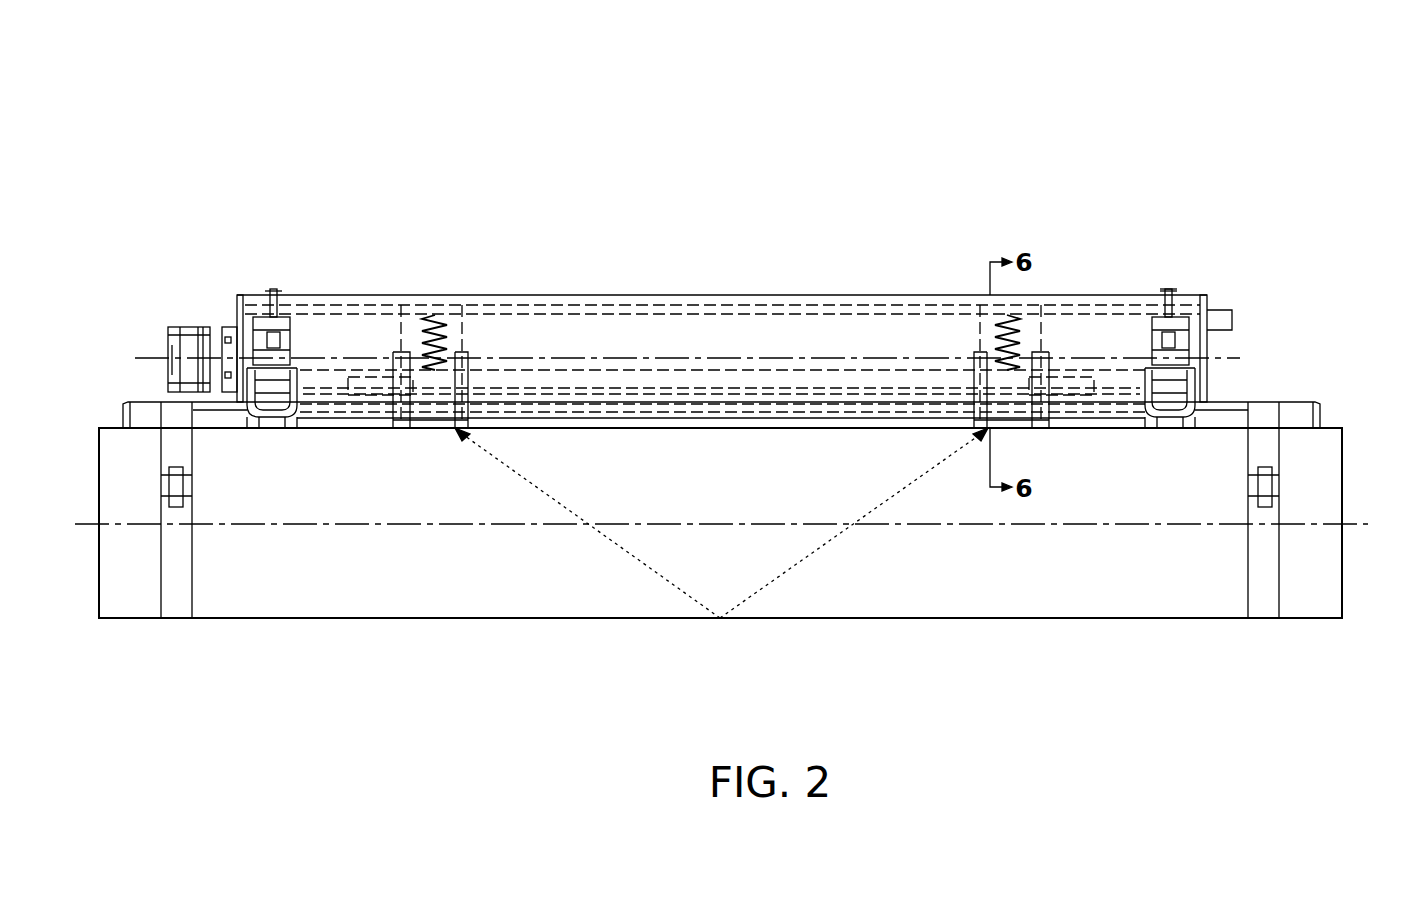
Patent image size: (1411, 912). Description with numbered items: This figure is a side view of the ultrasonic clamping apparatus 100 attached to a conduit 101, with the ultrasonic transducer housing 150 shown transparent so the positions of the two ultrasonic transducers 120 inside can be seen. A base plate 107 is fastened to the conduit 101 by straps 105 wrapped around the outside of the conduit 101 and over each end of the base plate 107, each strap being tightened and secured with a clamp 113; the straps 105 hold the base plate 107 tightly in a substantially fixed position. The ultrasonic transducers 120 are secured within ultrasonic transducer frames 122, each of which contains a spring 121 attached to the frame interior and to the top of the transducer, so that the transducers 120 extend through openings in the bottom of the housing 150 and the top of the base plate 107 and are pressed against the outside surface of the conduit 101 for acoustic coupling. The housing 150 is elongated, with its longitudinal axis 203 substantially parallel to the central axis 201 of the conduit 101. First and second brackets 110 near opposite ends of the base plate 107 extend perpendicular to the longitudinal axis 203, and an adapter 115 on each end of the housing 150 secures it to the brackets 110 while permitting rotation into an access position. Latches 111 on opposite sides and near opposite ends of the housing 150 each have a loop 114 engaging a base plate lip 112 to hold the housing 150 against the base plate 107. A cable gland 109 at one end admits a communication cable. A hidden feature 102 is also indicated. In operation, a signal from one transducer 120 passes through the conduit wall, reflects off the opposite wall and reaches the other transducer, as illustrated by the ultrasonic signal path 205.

The ultrasonic clamping apparatus 100 is at (815, 213).
The conduit 101 is at (977, 620).
The hidden mounting feature 102 is at (1085, 430).
The straps 105 is at (177, 622).
The base plate 107 is at (1293, 402).
The cable gland 109 is at (190, 327).
The brackets 110 is at (240, 300).
The clamps 111 is at (253, 325).
The base plate lip 112 is at (270, 418).
The clamp 113 is at (192, 485).
The loop 114 is at (290, 428).
The adapter 115 is at (236, 312).
The ultrasonic transducers 120 is at (462, 342).
The spring 121 is at (425, 316).
The ultrasonic transducer frames 122 is at (401, 347).
The ultrasonic transducer housing 150 is at (1185, 295).
The central axis 201 is at (1357, 527).
The longitudinal axis 203 is at (135, 358).
The ultrasonic signal path 205 is at (760, 592).